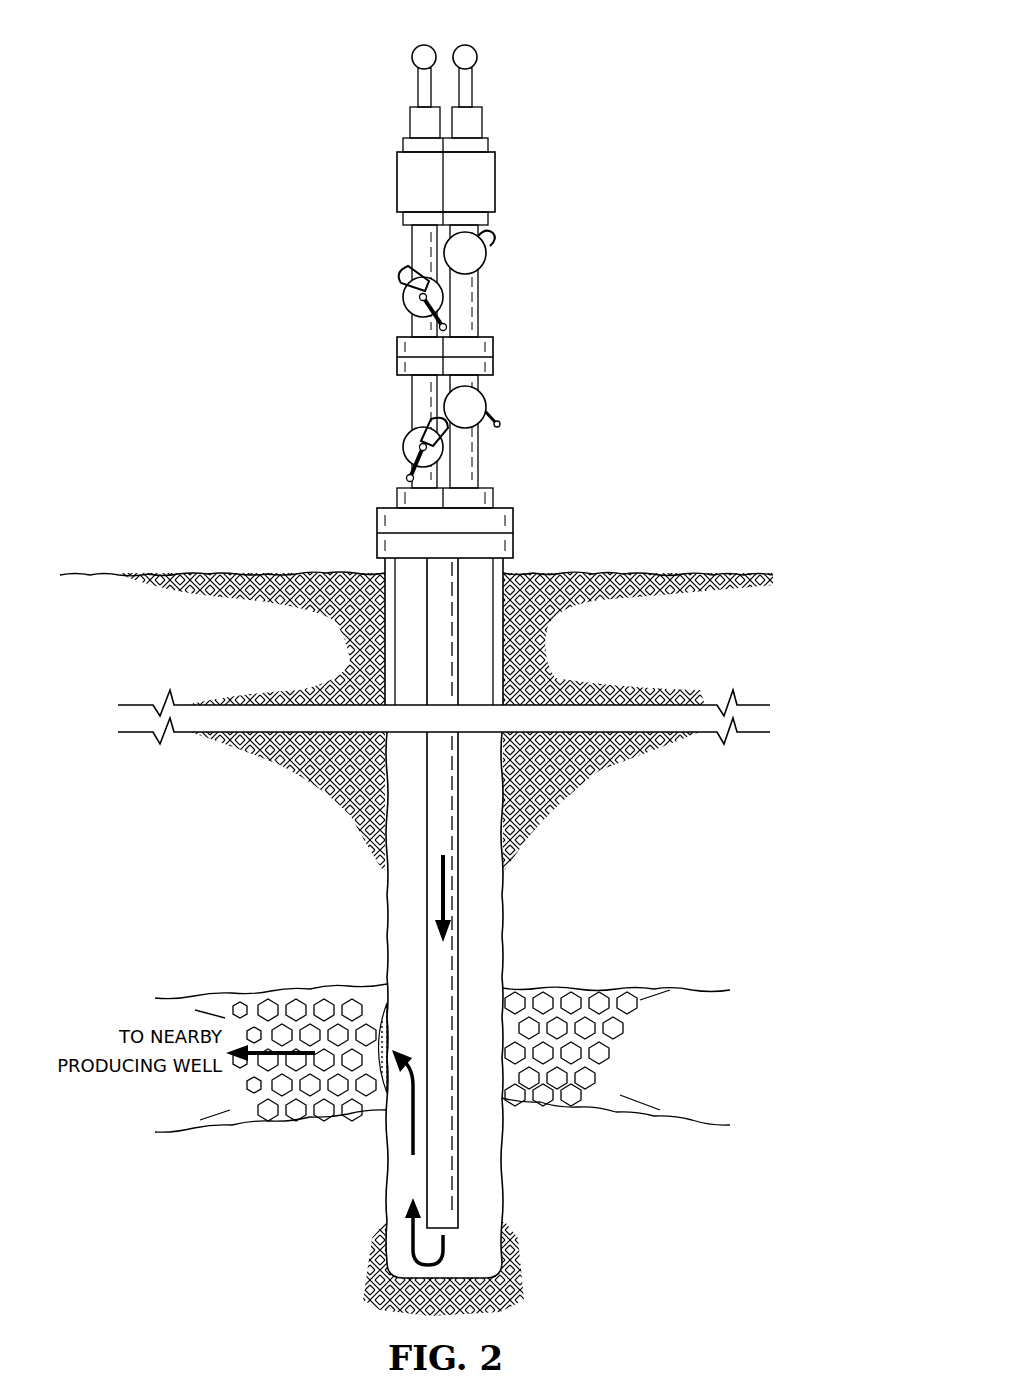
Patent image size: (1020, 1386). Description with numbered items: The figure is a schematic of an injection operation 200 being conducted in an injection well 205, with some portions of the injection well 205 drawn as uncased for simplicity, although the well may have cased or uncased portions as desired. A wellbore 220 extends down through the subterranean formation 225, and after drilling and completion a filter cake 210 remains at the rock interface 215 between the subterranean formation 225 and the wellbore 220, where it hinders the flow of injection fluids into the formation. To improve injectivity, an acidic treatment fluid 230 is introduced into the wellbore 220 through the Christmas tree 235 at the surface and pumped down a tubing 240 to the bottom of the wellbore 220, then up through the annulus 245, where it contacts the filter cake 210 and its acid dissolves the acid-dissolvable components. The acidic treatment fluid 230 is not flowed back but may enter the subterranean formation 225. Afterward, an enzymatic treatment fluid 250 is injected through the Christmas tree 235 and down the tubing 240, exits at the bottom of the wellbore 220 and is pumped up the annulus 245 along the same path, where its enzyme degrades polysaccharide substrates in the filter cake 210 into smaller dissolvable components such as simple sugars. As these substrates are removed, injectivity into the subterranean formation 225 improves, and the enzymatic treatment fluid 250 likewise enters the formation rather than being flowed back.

The injection operation 200 is at (218, 56).
The injection well 205 is at (330, 532).
The filter cake 210 is at (350, 1000).
The rock interface 215 is at (308, 1127).
The wellbore 220 is at (503, 945).
The subterranean formation 225 is at (304, 825).
The acidic treatment fluid 230 is at (413, 1138).
The Christmas tree 235 is at (397, 182).
The tubing 240 is at (460, 1143).
The annulus 245 is at (493, 1231).
The enzymatic treatment fluid 250 is at (447, 885).